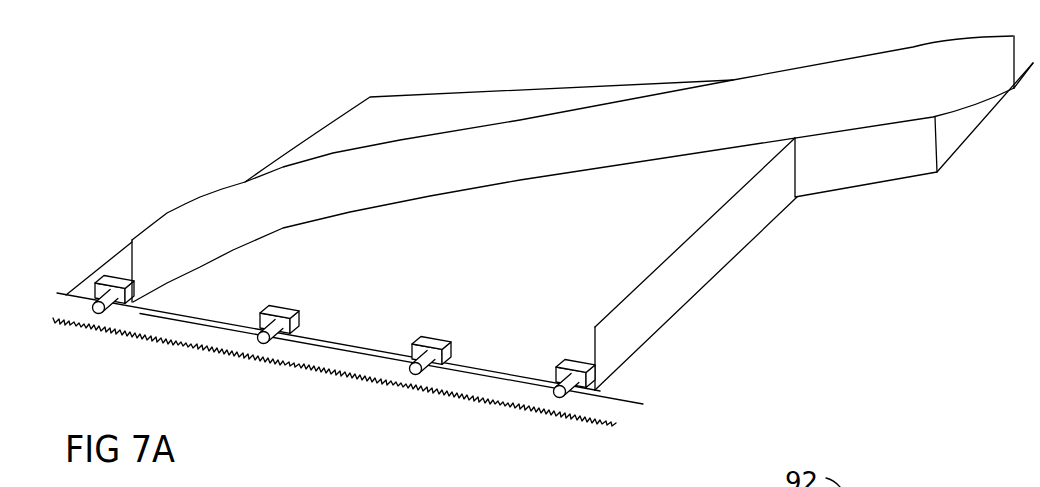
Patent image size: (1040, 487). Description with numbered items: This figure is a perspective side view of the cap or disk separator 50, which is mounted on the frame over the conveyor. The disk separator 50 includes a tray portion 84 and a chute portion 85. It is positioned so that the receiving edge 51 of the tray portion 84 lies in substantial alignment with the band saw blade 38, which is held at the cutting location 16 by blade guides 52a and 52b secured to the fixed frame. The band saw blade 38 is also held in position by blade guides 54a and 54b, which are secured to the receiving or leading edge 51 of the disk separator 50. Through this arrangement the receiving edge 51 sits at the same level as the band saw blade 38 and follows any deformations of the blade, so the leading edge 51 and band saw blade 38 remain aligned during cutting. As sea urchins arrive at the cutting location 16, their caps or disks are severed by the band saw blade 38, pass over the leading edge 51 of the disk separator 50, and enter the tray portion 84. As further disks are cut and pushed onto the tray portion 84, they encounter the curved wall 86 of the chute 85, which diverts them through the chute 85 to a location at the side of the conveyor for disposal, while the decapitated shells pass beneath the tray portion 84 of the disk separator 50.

The disk separator 50 is at (540, 231).
The cutting location 16 is at (610, 392).
The band saw blade 38 is at (343, 380).
The receiving edge 51 is at (185, 309).
The blade guide 52a is at (580, 363).
The blade guide 52b is at (112, 279).
The blade guide 54a is at (470, 306).
The blade guide 54b is at (290, 311).
The tray portion 84 is at (514, 232).
The chute portion 85 is at (972, 122).
The curved wall 86 is at (710, 132).